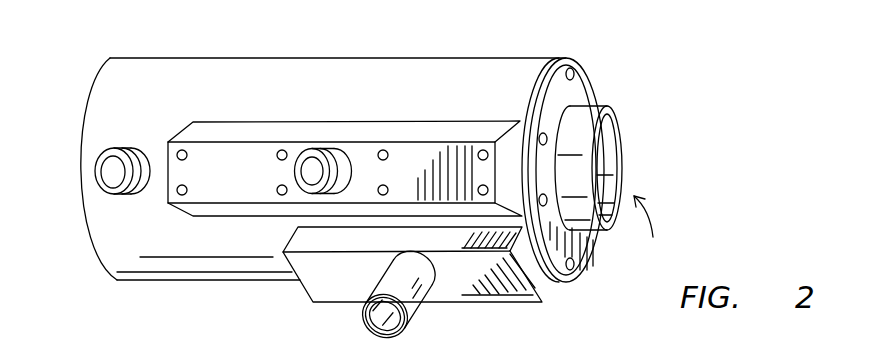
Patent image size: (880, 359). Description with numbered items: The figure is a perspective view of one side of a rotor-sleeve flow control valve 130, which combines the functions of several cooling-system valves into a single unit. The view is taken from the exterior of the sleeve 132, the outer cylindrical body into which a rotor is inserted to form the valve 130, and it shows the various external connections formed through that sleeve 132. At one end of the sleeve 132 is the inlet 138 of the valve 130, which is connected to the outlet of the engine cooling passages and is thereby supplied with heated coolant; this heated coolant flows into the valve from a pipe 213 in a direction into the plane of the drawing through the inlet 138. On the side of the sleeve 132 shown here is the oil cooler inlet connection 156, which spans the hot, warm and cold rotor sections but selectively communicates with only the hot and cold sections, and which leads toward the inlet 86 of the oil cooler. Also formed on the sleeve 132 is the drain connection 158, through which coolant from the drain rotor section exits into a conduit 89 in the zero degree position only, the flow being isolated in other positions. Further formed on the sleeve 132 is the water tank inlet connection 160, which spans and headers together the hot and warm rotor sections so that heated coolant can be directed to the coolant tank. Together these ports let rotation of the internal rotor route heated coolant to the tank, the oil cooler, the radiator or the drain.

The rotor-sleeve flow control valve 130 is at (342, 153).
The exterior sleeve 132 is at (242, 58).
The inlet 138 is at (615, 138).
The oil cooler inlet connection 156 is at (295, 170).
The drain connection 158 is at (132, 145).
The water tank inlet connection 160 is at (365, 324).
The inlet of oil cooler 86 is at (313, 172).
The conduit 89 is at (117, 178).
The pipe 213 is at (664, 232).